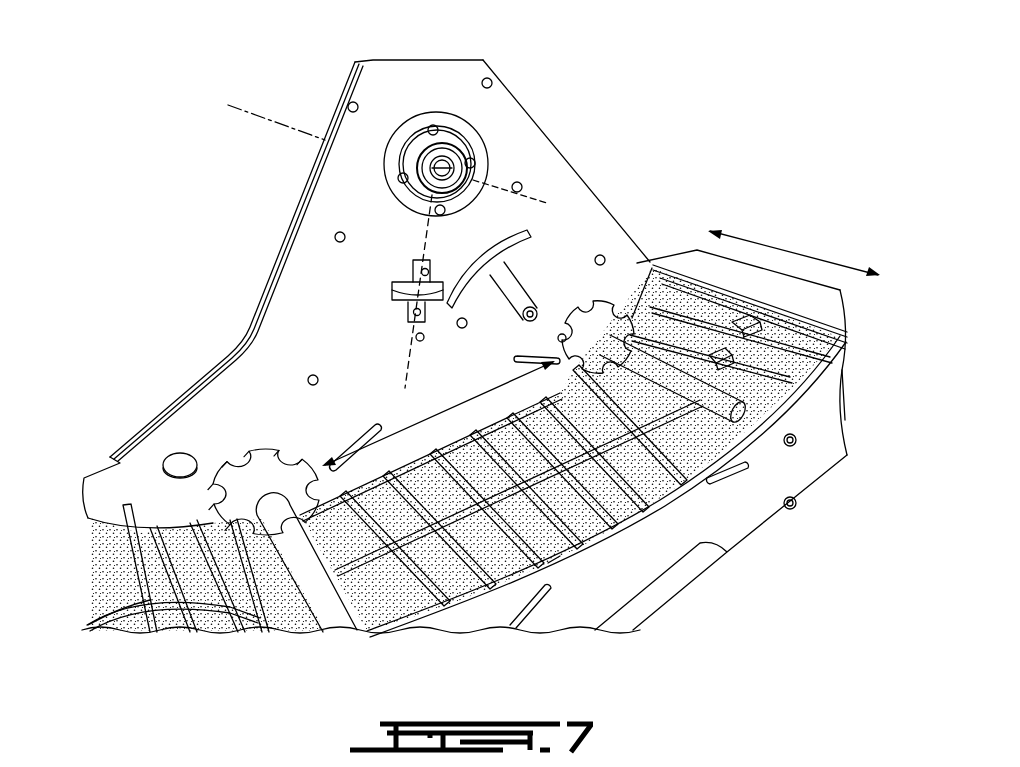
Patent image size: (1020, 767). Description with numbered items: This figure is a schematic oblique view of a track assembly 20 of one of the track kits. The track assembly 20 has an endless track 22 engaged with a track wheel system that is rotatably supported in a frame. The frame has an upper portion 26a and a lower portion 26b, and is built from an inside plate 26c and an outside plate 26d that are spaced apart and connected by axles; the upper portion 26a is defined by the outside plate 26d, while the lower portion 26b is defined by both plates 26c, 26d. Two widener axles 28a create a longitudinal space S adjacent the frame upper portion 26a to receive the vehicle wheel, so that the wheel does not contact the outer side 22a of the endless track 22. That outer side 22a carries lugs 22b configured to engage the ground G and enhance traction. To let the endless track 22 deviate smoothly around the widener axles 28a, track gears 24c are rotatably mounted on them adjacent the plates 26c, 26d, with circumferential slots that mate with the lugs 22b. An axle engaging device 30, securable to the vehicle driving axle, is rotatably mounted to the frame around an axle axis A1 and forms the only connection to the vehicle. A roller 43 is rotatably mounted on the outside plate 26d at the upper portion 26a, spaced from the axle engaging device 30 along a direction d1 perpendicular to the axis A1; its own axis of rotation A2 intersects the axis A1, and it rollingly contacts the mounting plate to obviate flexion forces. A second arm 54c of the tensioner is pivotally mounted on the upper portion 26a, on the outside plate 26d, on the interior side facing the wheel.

The track assembly 20 is at (657, 181).
The endless track 22 is at (850, 393).
The outer side of the endless track 22a is at (86, 632).
The lugs 22b is at (550, 563).
The track gears 24c is at (622, 303).
The frame upper portion 26a is at (580, 160).
The frame lower portion 26b is at (848, 428).
The inside plate 26c is at (745, 526).
The outside plate 26d is at (333, 345).
The widener axles 28a is at (349, 637).
The axle engaging device 30 is at (487, 121).
The roller 43 is at (353, 270).
The second arm 54c is at (524, 288).
The axis of rotation of the axle engaging device A1 is at (257, 108).
The axis of rotation of the roller A2 is at (411, 346).
The direction d1 is at (420, 243).
The longitudinal space S is at (440, 408).
The ground G is at (816, 596).